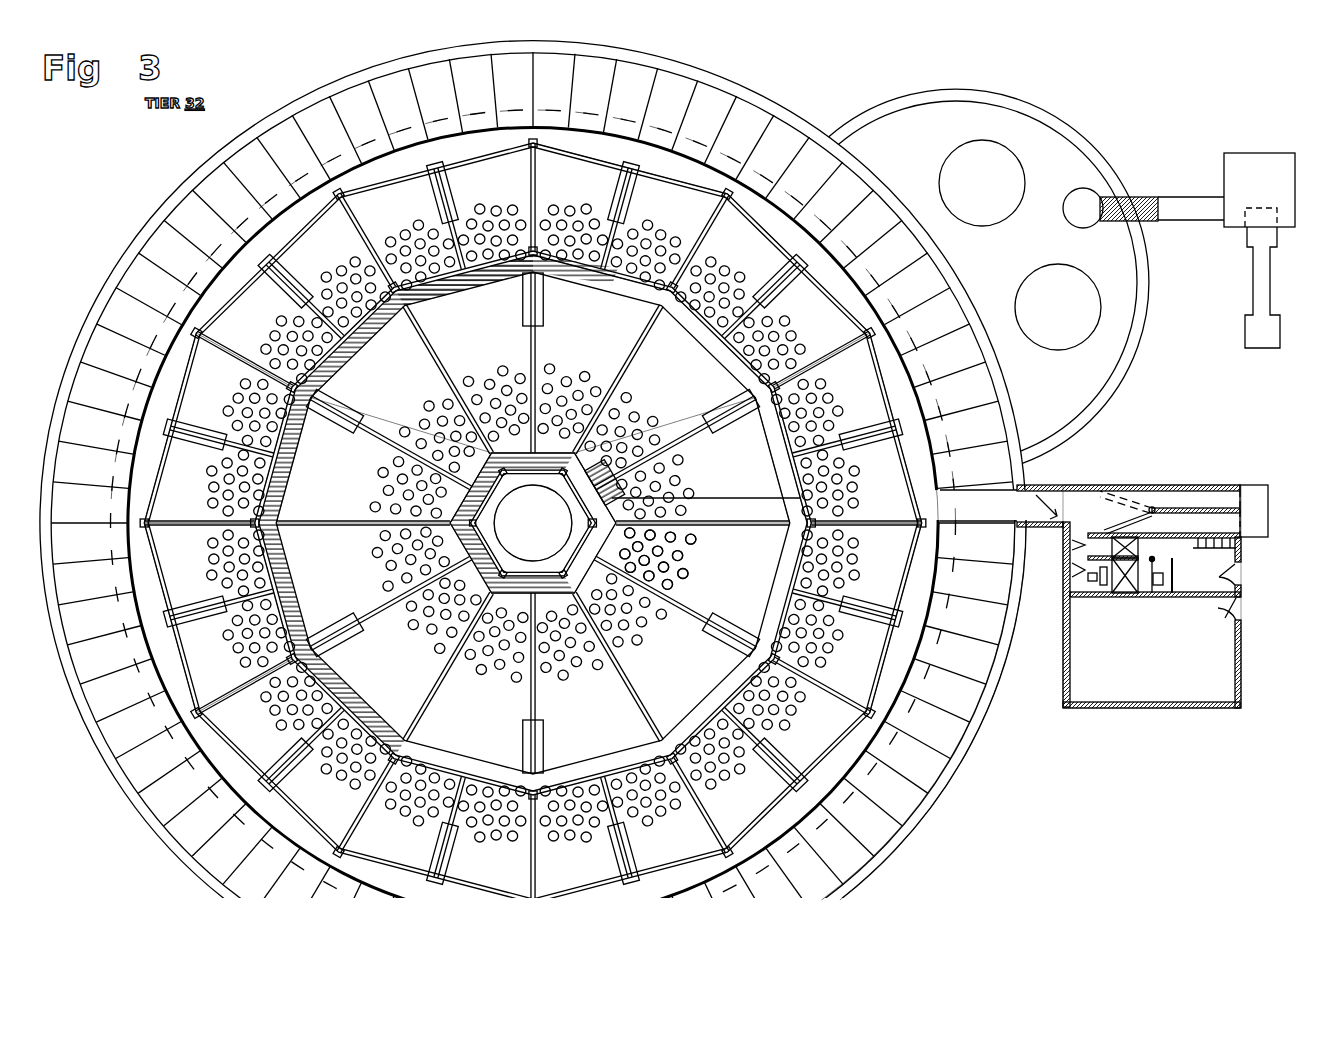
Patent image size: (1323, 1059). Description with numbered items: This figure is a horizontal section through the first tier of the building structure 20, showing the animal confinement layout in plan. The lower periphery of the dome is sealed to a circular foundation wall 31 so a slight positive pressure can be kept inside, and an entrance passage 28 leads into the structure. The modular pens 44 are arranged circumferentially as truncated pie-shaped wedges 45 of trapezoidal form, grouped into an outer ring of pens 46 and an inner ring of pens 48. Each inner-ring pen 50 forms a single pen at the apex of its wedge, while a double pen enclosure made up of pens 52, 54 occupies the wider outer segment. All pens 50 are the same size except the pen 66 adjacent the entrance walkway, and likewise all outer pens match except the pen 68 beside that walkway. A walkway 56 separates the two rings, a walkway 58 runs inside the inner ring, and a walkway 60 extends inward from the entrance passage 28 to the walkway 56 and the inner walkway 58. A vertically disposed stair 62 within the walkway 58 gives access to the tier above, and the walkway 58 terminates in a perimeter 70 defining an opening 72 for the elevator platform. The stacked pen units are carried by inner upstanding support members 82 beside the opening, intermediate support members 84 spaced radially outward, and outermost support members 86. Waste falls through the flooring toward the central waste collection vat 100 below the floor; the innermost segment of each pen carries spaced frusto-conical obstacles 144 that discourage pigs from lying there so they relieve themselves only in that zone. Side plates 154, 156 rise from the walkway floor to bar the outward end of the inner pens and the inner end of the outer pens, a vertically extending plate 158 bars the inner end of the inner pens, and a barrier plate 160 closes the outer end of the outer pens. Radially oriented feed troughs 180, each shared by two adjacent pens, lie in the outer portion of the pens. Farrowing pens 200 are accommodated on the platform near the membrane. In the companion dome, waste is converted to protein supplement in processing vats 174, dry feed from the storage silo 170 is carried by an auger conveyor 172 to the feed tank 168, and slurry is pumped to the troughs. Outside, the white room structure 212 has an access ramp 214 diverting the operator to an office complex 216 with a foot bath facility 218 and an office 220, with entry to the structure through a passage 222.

The building structure 20 is at (130, 178).
The entrance passage 28 is at (1015, 512).
The circular foundation wall 31 is at (765, 96).
The modular pens 44 is at (582, 148).
The pie-shaped wedges 45 is at (905, 580).
The outer ring of pens 46 is at (868, 516).
The inner ring of pens 48 is at (730, 520).
The pens 50 is at (501, 548).
The pen 52 is at (502, 587).
The pen 54 is at (514, 671).
The walkway 56 is at (498, 280).
The walkway 58 is at (533, 523).
The walkway 60 is at (655, 538).
The stair 62 is at (613, 491).
The pen 66 is at (681, 461).
The pen 68 is at (848, 428).
The perimeter 70 is at (590, 530).
The opening 72 is at (533, 523).
The inner upstanding support members 82 is at (500, 570).
The intermediate support members 84 is at (640, 322).
The outermost support members 86 is at (622, 166).
The central waste collection vat 100 is at (533, 523).
The obstacles 144 is at (560, 410).
The side plate 154 is at (386, 326).
The side plate 156 is at (360, 307).
The vertically extending plate 158 is at (470, 420).
The barrier plate 160 is at (305, 236).
The feed tank 168 is at (1075, 200).
The storage silo 170 is at (1243, 155).
The auger conveyor 172 is at (1148, 196).
The processing vats 174 is at (1040, 282).
The feed troughs 180 is at (544, 316).
The farrowing pens 200 is at (700, 92).
The white room structure 212 is at (1185, 718).
The access ramp 214 is at (1268, 500).
The office complex 216 is at (1232, 560).
The foot bath facility 218 is at (1140, 548).
The office 220 is at (1152, 615).
The passage 222 is at (1080, 545).